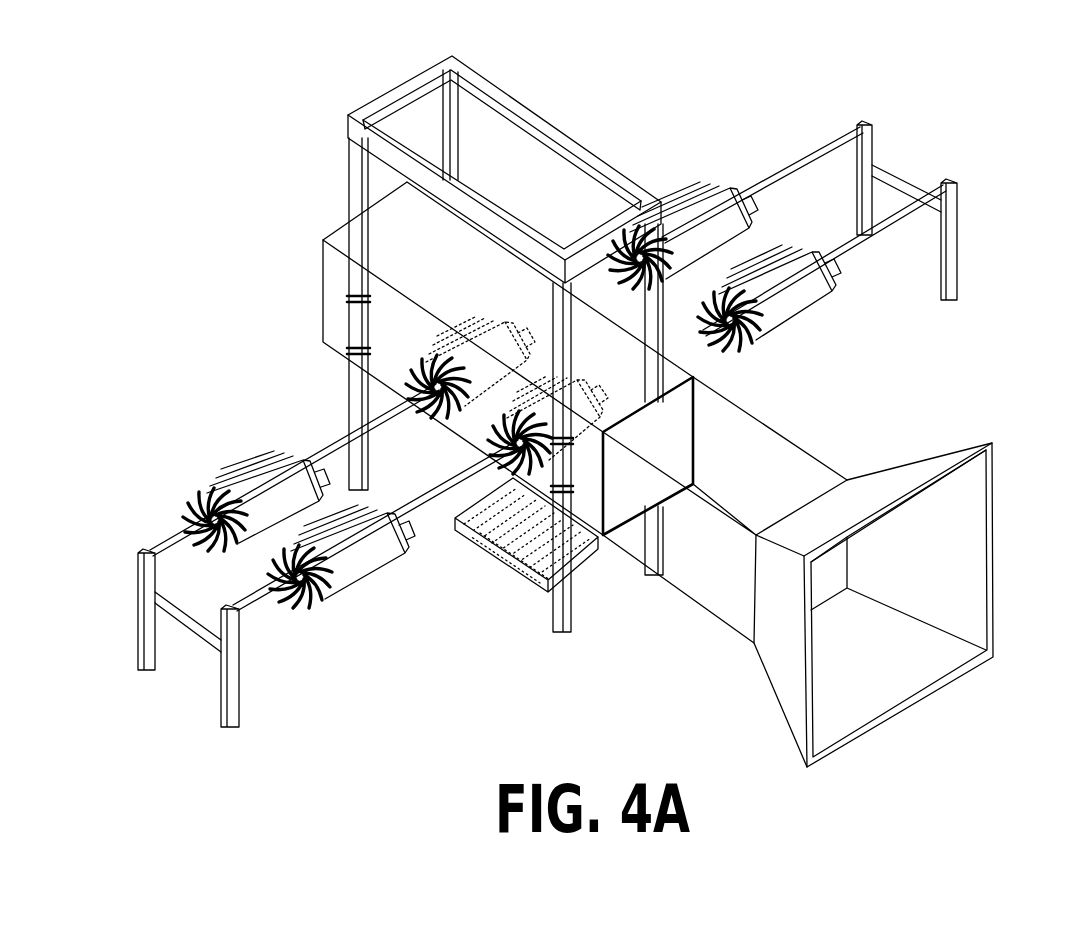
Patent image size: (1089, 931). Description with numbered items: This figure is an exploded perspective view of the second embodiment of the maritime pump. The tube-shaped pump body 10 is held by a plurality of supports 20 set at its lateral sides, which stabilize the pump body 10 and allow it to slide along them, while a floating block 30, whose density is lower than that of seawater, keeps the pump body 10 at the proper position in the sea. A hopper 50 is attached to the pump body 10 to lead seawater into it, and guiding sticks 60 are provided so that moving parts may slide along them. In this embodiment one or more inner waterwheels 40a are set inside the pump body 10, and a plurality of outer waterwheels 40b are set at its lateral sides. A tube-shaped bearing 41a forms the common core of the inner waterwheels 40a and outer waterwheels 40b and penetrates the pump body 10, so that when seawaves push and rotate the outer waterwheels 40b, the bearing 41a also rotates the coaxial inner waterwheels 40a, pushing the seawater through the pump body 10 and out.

The pump body 10 is at (452, 285).
The supports 20 is at (568, 138).
The floating block 30 is at (517, 530).
The inner waterwheels 40a is at (807, 400).
The outer waterwheels 40b is at (313, 530).
The bearing 41a is at (478, 443).
The hopper 50 is at (878, 493).
The guiding sticks 60 is at (877, 160).